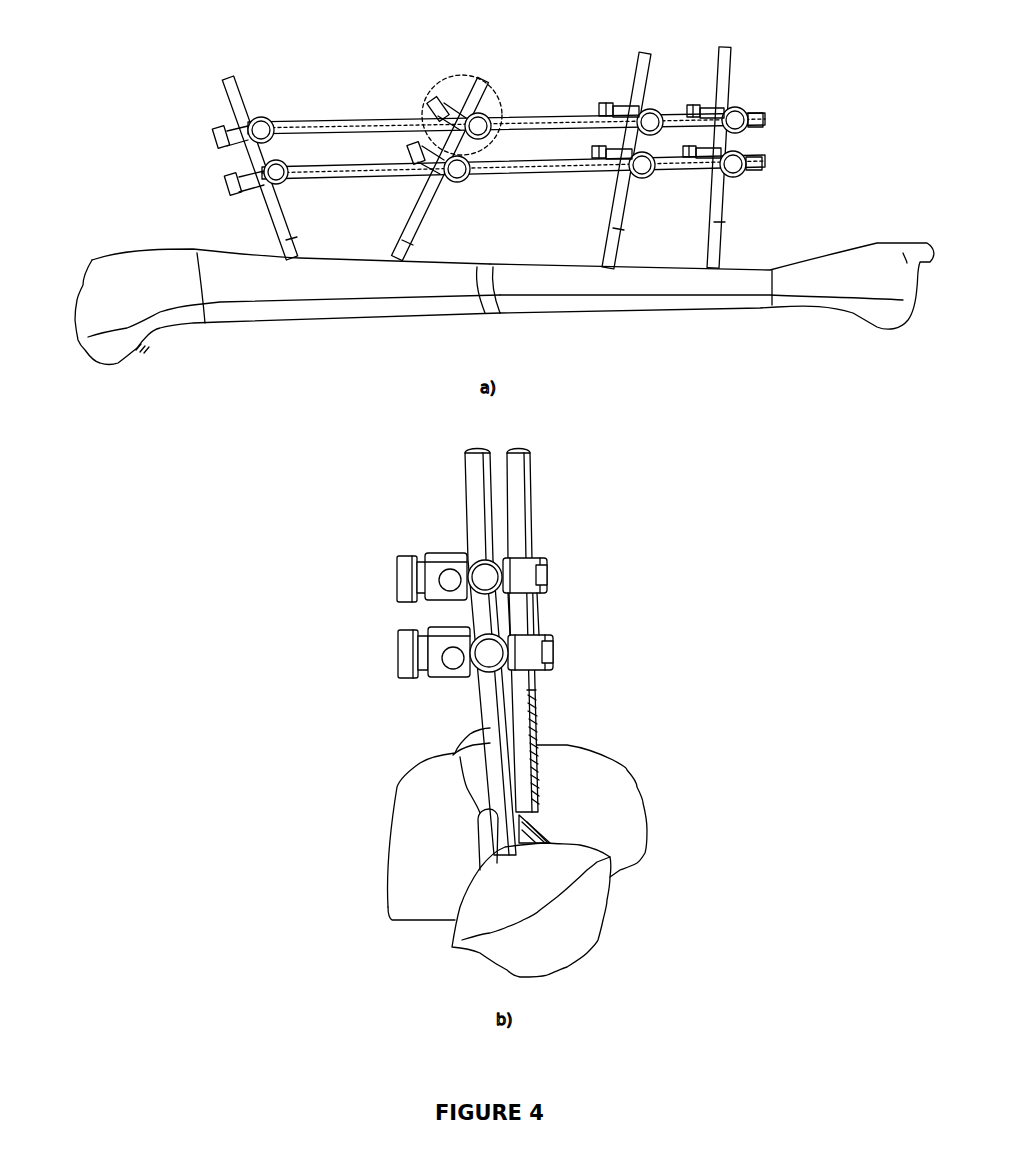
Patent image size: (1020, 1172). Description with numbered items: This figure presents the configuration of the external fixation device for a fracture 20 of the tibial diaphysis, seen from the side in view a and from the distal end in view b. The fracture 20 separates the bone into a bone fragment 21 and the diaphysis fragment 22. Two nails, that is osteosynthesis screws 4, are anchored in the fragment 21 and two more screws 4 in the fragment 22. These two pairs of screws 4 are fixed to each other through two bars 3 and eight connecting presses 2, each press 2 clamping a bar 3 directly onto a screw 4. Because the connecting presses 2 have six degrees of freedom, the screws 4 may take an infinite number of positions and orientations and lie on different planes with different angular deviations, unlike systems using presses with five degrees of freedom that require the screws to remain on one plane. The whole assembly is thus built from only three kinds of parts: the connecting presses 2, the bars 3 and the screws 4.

The connecting press 2 is at (437, 87).
The bar 3 is at (352, 170).
The osteosynthesis screw 4 is at (232, 86).
The fracture 20 is at (492, 297).
The bone fragment 21 is at (349, 286).
The bone diaphysis 22 is at (655, 288).